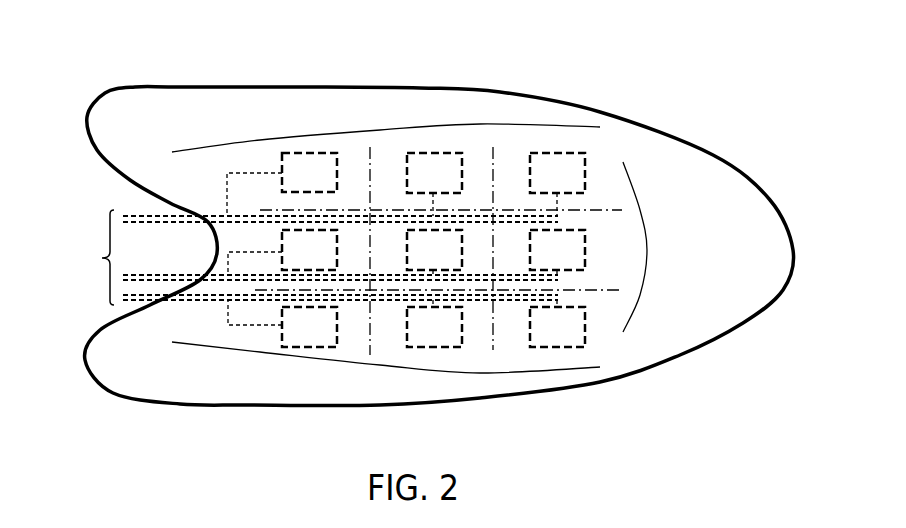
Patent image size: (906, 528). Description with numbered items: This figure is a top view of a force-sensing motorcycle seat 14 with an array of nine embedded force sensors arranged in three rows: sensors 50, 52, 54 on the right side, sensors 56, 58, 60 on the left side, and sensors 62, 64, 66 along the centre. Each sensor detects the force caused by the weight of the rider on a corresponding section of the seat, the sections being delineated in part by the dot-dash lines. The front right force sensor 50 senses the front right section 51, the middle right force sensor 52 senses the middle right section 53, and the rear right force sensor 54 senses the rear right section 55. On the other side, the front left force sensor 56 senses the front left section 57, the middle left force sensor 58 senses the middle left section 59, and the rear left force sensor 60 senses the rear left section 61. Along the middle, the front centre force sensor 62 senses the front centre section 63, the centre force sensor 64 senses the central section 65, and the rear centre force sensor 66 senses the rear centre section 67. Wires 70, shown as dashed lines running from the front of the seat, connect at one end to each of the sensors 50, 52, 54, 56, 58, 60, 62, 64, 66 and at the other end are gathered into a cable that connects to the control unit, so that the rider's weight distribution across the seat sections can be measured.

The force-sensing motorcycle seat 14 is at (713, 157).
The front right force sensor 50 is at (309, 172).
The front right section 51 is at (350, 157).
The middle right force sensor 52 is at (434, 173).
The middle right section 53 is at (390, 163).
The rear right force sensor 54 is at (557, 173).
The rear right section 55 is at (597, 168).
The front left force sensor 56 is at (309, 327).
The front left section 57 is at (347, 340).
The middle left force sensor 58 is at (434, 327).
The middle left section 59 is at (393, 337).
The rear left force sensor 60 is at (557, 327).
The rear left section 61 is at (598, 318).
The front centre force sensor 62 is at (309, 250).
The front centre section 63 is at (268, 237).
The centre force sensor 64 is at (434, 250).
The central section 65 is at (470, 242).
The rear centre force sensor 66 is at (557, 250).
The rear centre section 67 is at (600, 253).
The wires 70 is at (98, 243).